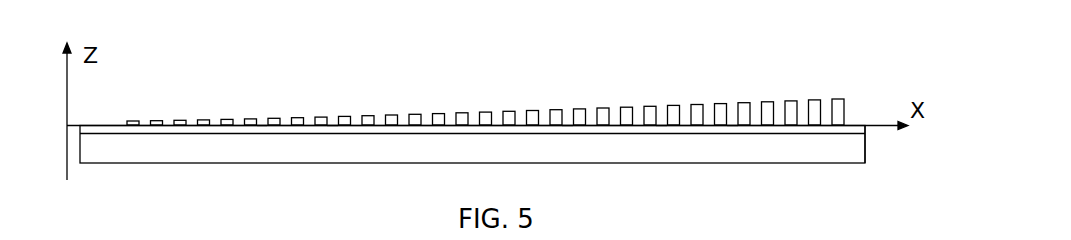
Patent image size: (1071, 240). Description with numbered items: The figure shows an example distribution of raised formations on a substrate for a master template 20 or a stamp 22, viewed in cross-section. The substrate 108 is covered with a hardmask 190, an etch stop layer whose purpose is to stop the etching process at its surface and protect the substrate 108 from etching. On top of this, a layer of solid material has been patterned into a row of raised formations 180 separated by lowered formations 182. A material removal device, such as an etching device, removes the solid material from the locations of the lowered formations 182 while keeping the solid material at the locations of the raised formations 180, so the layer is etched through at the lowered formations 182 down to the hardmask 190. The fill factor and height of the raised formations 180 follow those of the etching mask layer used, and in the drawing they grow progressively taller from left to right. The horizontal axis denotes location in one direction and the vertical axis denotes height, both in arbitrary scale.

The master template 20 is at (160, 40).
The stamp 22 is at (505, 131).
The substrate 108 is at (497, 157).
The raised formations 180 is at (105, 125).
The lowered formations 182 is at (732, 126).
The hardmask 190 is at (866, 131).